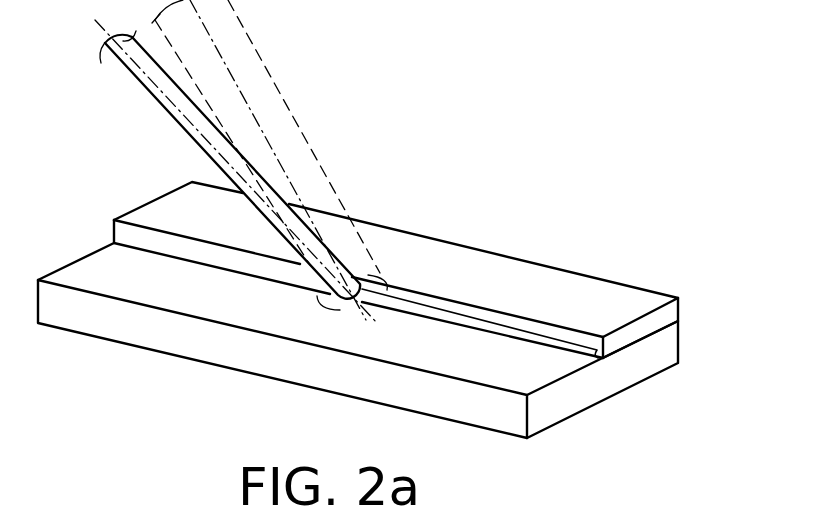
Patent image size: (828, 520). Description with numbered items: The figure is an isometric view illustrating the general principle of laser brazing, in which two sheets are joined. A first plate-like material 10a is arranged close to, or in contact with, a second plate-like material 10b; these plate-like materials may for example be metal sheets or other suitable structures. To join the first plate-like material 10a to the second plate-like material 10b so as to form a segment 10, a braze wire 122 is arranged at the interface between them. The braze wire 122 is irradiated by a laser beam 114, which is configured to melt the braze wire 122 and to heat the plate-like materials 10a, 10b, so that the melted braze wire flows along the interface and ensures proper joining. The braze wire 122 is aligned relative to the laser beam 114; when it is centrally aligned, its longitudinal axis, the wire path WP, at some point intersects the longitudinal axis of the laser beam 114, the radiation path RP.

The segment 10 is at (375, 325).
The first plate-like material 10a is at (147, 325).
The second plate-like material 10b is at (510, 287).
The braze wire 122 is at (143, 88).
The laser beam 114 is at (283, 98).
The wire path WP is at (176, 112).
The radiation path RP is at (227, 68).